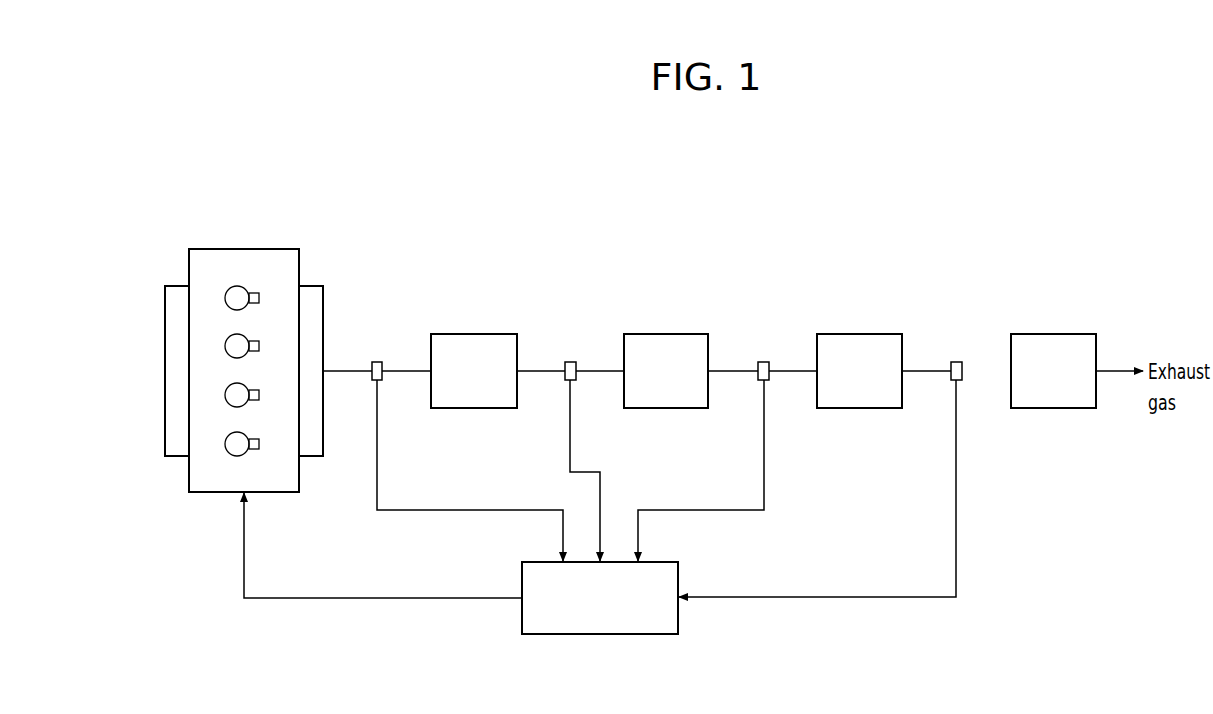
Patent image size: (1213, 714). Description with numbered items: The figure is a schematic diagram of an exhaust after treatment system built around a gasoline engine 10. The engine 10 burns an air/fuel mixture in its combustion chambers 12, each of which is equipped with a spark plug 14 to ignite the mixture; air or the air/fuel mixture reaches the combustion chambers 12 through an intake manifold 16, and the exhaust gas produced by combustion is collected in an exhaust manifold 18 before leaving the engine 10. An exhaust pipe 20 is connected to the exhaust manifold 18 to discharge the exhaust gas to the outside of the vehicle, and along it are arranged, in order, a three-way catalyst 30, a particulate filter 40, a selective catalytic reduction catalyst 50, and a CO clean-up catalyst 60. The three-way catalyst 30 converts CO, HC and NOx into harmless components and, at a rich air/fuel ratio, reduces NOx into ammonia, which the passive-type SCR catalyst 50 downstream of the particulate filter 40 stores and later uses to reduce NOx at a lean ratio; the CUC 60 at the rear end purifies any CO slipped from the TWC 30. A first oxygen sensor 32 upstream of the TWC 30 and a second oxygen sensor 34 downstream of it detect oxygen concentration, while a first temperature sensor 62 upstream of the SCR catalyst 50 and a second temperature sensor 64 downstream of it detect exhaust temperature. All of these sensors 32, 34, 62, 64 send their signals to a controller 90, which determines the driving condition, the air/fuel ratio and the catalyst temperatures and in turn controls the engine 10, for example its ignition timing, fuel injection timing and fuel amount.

The engine 10 is at (268, 226).
The combustion chamber 12 is at (237, 286).
The spark plug 14 is at (262, 298).
The intake manifold 16 is at (178, 286).
The exhaust manifold 18 is at (311, 286).
The exhaust pipe 20 is at (346, 374).
The three-way catalyst (TWC) 30 is at (473, 334).
The first oxygen sensor 32 is at (377, 362).
The second oxygen sensor 34 is at (570, 362).
The particulate filter (GPF) 40 is at (666, 334).
The selective catalytic reduction (SCR) catalyst 50 is at (859, 334).
The CO clean-up catalyst (CUC) 60 is at (1053, 334).
The first temperature sensor 62 is at (763, 362).
The second temperature sensor 64 is at (956, 362).
The controller 90 is at (599, 634).